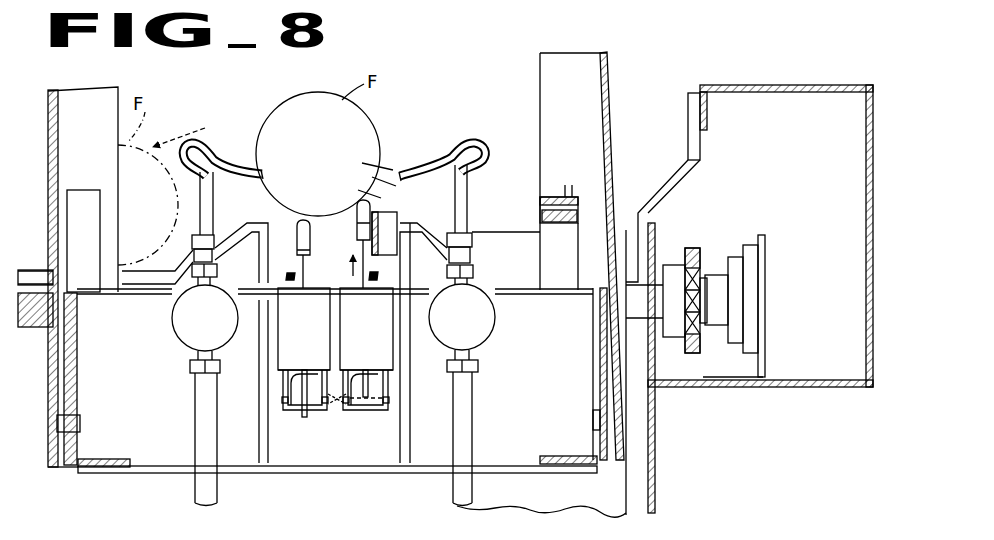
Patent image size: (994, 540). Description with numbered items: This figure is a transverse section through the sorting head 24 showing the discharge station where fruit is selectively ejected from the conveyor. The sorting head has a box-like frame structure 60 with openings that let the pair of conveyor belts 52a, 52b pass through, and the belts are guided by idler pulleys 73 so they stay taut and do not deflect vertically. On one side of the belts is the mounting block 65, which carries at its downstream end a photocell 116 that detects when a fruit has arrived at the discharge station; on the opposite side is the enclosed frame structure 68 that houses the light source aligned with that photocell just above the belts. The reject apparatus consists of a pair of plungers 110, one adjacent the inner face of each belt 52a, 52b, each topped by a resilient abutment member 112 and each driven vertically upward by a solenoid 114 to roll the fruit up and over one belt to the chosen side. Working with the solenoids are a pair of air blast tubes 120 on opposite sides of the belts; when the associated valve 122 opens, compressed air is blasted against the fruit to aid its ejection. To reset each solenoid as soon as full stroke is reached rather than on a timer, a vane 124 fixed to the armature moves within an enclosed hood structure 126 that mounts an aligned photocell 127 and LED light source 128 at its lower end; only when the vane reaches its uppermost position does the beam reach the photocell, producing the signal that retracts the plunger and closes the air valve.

The sorting head 24 is at (612, 72).
The box-like frame structure 60 is at (608, 100).
The mounting block 65 is at (570, 240).
The enclosed frame structure 68 is at (80, 193).
The second pair of idler pulleys 73 is at (398, 215).
The conveyor belt 52a is at (377, 214).
The conveyor belt 52b is at (286, 215).
The plunger 110 is at (363, 242).
The resilient abutment member 112 is at (306, 224).
The solenoid 114 is at (318, 318).
The photocell 116 is at (573, 186).
The air blast tube 120 is at (217, 163).
The valve 122 is at (223, 329).
The vane 124 is at (316, 372).
The enclosed hood structure 126 is at (283, 382).
The photocell 127 is at (281, 401).
The LED light source 128 is at (312, 405).